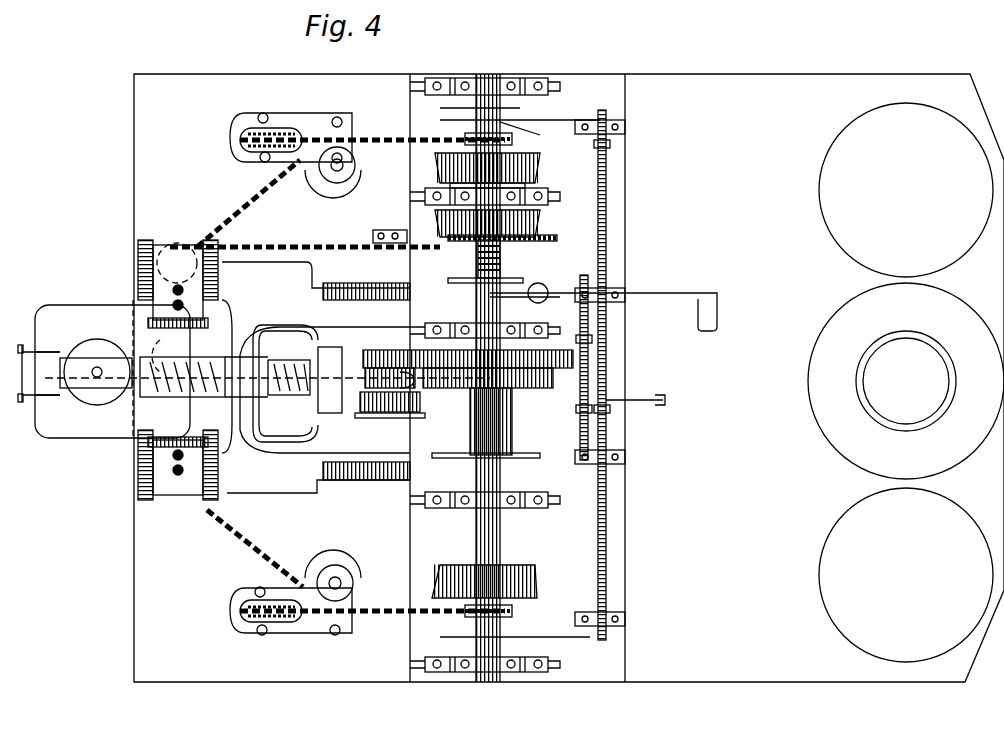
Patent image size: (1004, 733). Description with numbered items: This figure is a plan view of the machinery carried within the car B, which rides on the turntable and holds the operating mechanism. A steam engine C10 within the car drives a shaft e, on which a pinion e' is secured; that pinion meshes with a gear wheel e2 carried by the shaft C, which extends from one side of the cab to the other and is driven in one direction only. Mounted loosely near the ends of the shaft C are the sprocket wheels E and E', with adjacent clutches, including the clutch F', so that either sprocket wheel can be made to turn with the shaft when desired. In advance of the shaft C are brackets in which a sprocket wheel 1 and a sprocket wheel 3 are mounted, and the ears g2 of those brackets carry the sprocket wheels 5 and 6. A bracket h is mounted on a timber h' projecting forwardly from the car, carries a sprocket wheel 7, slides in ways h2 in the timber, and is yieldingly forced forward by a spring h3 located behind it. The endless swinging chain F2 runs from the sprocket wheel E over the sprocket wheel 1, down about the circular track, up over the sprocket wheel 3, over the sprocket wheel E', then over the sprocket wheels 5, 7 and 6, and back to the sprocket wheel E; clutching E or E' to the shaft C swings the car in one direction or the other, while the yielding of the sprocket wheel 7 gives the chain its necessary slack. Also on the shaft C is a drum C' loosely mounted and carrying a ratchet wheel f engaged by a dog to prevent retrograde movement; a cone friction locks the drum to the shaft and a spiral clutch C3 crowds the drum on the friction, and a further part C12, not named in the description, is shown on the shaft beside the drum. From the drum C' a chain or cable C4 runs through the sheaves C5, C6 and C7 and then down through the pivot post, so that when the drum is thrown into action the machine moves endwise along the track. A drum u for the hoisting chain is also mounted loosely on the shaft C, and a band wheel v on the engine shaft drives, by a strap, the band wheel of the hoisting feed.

The car B is at (569, 368).
The shaft C is at (505, 378).
The drum C' is at (505, 259).
The spiral clutch C3 is at (535, 300).
The chain or cable C4 is at (352, 238).
The sheave C5 is at (205, 236).
The sheave C6 is at (182, 343).
The sheave C7 is at (414, 383).
The steam engine C10 is at (316, 377).
The bevel gear C12 is at (540, 222).
The sprocket wheel E is at (502, 609).
The sprocket wheel E' is at (508, 133).
The clutch F' is at (503, 375).
The endless chain F2 is at (260, 230).
The ratchet wheel f is at (440, 237).
The shaft e is at (391, 421).
The pinion e' is at (377, 365).
The gear wheel e2 is at (560, 371).
The drum u is at (512, 425).
The band wheel v is at (412, 398).
The ears g2 is at (355, 165).
The bracket h is at (254, 370).
The timber h' is at (47, 386).
The ways h2 is at (85, 355).
The spring h3 is at (220, 360).
The sprocket wheel 1 is at (262, 650).
The sprocket wheel 3 is at (283, 128).
The sprocket wheel 5 is at (333, 192).
The sprocket wheel 6 is at (342, 561).
The sprocket wheel 7 is at (92, 395).